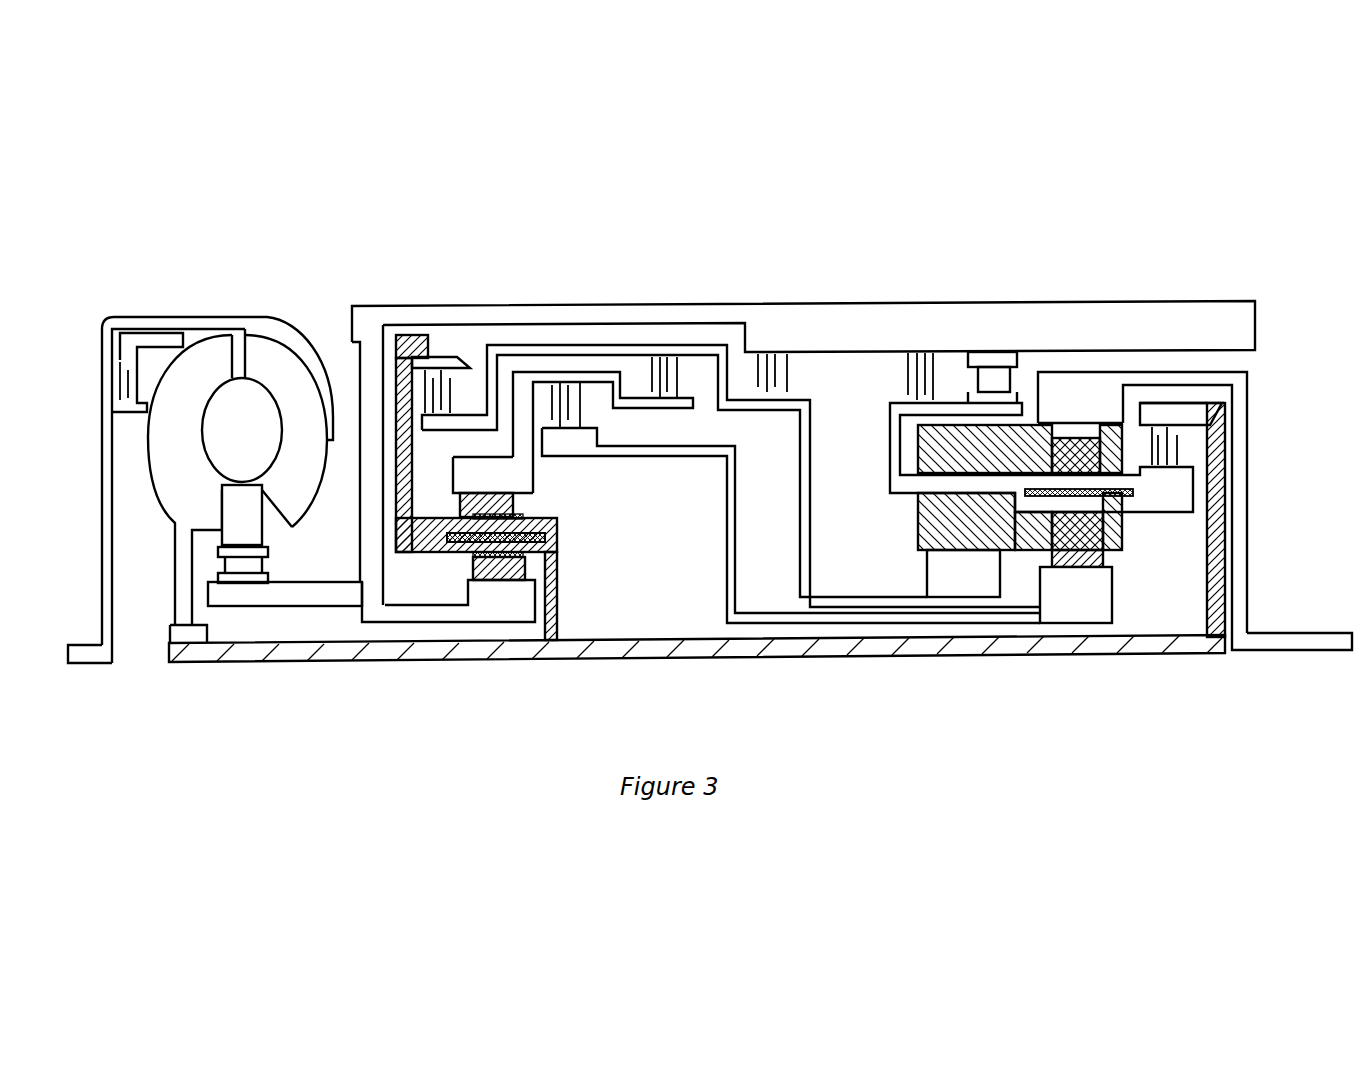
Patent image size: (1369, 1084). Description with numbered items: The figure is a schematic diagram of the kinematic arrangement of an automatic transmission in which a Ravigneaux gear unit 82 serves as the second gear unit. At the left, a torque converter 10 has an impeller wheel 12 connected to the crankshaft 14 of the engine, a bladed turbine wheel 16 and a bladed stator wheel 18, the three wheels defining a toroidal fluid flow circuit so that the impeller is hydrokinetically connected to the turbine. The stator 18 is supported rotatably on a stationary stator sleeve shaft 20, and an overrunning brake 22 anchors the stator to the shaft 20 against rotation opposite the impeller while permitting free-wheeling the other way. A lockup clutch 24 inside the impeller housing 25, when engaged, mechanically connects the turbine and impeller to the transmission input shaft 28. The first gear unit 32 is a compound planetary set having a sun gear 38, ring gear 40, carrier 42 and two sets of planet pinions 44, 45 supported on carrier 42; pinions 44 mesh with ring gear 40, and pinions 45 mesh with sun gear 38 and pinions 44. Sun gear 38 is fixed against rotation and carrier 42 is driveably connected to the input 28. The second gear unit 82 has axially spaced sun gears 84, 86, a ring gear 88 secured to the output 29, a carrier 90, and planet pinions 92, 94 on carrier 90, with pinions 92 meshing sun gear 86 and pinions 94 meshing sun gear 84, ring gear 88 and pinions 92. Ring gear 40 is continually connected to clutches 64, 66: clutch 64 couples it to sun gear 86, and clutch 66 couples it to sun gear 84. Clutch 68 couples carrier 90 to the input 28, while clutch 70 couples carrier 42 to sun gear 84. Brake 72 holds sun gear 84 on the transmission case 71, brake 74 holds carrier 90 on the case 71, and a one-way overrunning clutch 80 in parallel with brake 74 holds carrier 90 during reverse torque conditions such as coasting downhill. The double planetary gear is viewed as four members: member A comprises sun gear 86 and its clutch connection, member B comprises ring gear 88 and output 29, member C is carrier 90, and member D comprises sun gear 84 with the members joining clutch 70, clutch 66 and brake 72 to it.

The torque converter 10 is at (303, 310).
The impeller wheel 12 is at (316, 453).
The crankshaft 14 is at (95, 665).
The bladed turbine wheel 16 is at (195, 453).
The bladed stator wheel 18 is at (258, 483).
The stator sleeve shaft 20 is at (314, 582).
The overrunning brake 22 is at (262, 568).
The lockup clutch 24 is at (128, 385).
The torque converter impeller housing 25 is at (170, 317).
The transmission input shaft 28 is at (283, 643).
The output 29 is at (1297, 633).
The first gear unit 32 is at (445, 565).
The sun gear 38 is at (502, 595).
The ring gear 40 is at (452, 477).
The carrier 42 is at (430, 498).
The planet pinions 44 is at (513, 503).
The planet pinions 45 is at (468, 572).
The clutch 64 is at (567, 407).
The clutch 66 is at (668, 373).
The clutch 68 is at (1167, 450).
The clutch 70 is at (455, 392).
The transmission case 71 is at (523, 306).
The brake 72 is at (775, 372).
The brake 74 is at (903, 387).
The one-way overrunning clutch 80 is at (968, 373).
The Ravigneaux gear unit 82 is at (903, 537).
The sun gear 84 is at (927, 573).
The sun gear 86 is at (1113, 593).
The ring gear 88 is at (1073, 372).
The carrier 90 is at (888, 447).
The planet pinions 92 is at (1107, 555).
The planet pinions 94 is at (913, 510).
The first member A is at (1017, 625).
The second member B is at (1193, 372).
The third member C is at (1152, 512).
The fourth member D is at (835, 595).